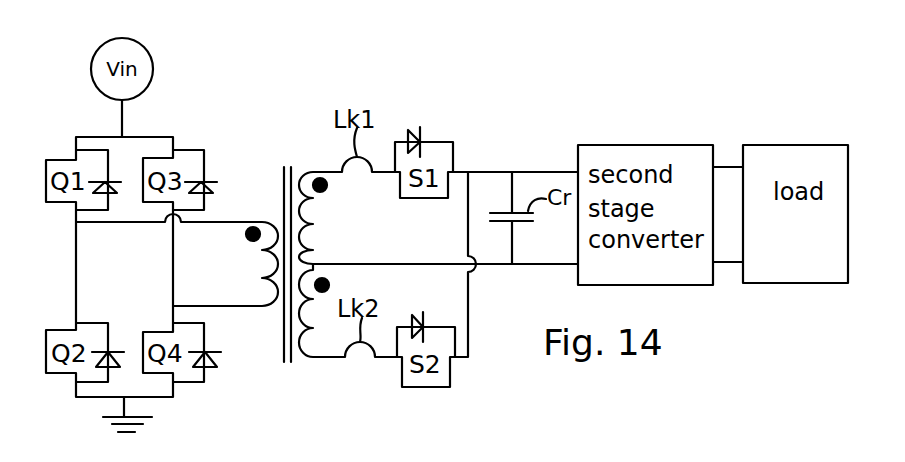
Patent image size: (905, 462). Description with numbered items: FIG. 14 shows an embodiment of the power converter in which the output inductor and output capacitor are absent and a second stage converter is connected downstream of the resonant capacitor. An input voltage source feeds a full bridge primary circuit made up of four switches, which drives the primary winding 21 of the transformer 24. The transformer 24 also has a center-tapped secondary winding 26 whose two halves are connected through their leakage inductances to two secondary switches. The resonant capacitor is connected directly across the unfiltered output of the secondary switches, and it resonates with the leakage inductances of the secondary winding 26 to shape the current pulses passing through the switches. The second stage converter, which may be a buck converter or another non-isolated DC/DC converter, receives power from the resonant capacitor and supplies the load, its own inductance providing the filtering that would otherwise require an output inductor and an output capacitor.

The primary winding 21 is at (262, 270).
The transformer 24 is at (282, 195).
The center-tapped secondary winding 26 is at (315, 262).